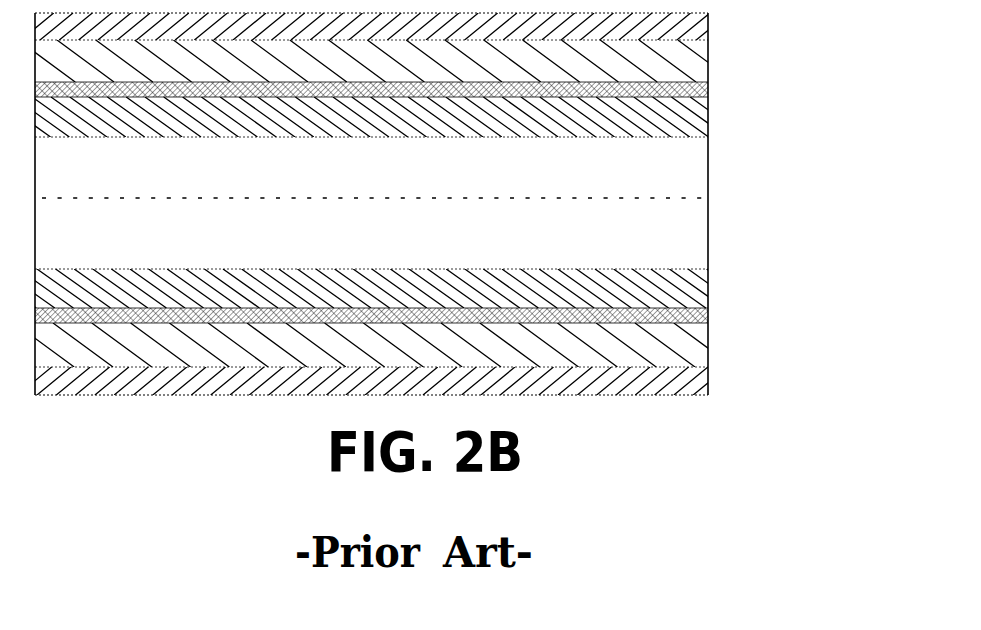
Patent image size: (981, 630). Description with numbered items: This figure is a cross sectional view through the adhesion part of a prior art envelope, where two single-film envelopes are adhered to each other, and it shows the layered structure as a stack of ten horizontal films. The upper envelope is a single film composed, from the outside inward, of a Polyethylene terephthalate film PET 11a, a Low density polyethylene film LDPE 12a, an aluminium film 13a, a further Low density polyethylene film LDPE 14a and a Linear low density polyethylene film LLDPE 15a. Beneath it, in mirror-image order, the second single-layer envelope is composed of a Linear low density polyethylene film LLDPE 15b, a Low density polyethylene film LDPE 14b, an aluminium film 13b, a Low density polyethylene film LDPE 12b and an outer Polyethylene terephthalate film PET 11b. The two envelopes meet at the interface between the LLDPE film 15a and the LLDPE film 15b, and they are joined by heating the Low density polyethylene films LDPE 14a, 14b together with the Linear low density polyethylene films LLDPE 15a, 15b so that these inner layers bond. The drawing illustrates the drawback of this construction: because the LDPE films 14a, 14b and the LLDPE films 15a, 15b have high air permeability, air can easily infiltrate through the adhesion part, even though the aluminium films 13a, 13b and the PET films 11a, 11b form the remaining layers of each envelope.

The Polyethylene terephthalate film PET 11a is at (708, 25).
The Low density polyethylene film LDPE 12a is at (708, 60).
The aluminium film 13a is at (708, 90).
The Low density polyethylene film LDPE 14a is at (708, 117).
The Linear low density polyethylene film LLDPE 15a is at (708, 170).
The Linear low density polyethylene film LLDPE 15b is at (708, 232).
The Low density polyethylene film LDPE 14b is at (708, 295).
The aluminium film 13b is at (708, 317).
The Low density polyethylene film LDPE 12b is at (708, 348).
The Polyethylene terephthalate film PET 11b is at (708, 383).